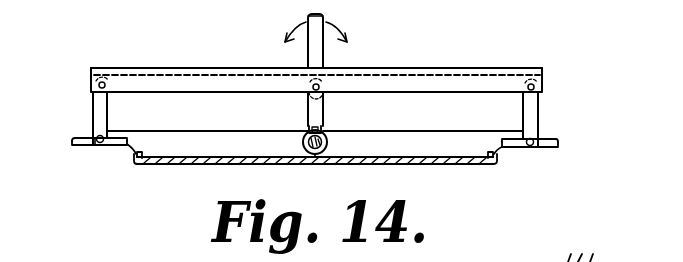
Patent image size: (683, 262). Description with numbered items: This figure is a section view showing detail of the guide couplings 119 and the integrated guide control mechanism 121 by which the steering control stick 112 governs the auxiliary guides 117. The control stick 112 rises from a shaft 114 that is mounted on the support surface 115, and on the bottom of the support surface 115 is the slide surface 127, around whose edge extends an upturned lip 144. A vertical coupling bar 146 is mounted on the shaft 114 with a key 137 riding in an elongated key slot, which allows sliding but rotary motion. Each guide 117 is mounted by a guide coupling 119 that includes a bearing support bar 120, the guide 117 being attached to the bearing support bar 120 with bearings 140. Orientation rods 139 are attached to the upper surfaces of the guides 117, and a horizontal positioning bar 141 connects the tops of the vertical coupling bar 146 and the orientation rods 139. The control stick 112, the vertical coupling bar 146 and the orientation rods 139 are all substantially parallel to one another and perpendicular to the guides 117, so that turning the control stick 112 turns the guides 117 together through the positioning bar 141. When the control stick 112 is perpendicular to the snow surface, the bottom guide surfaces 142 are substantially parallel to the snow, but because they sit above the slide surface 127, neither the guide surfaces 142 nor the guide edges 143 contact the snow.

The steering control stick 112 is at (305, 18).
The shaft 114 is at (320, 157).
The support surface 115 is at (217, 137).
The auxiliary guide 117 is at (80, 138).
The guide coupling 119 is at (95, 166).
The bearing support bar 120 is at (432, 130).
The integrated guide control mechanism 121 is at (150, 46).
The slide surface 127 is at (202, 165).
The key 137 is at (306, 128).
The orientation rod 139 is at (540, 108).
The bearing 140 is at (104, 150).
The horizontal positioning bar 141 is at (444, 70).
The bottom guide surface 142 is at (553, 150).
The guide edge 143 is at (72, 148).
The upturned lip 144 is at (500, 165).
The vertical coupling bar 146 is at (325, 113).